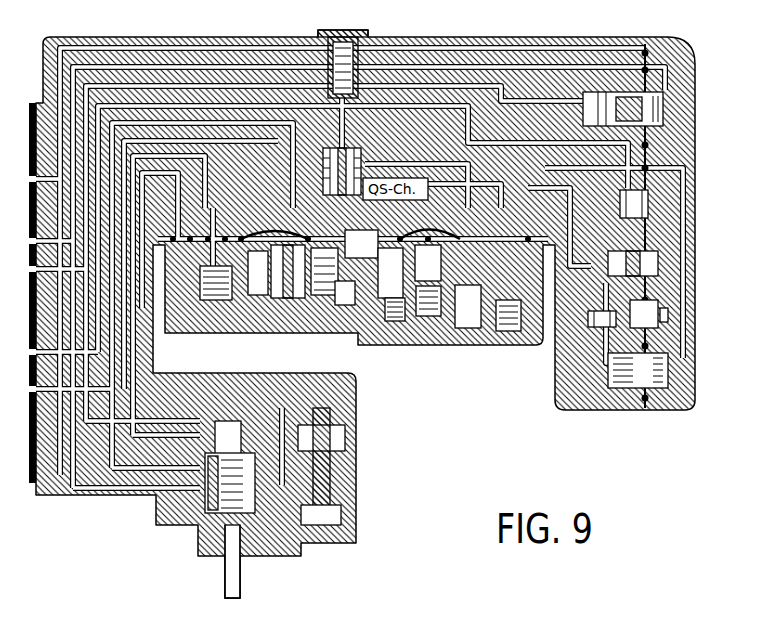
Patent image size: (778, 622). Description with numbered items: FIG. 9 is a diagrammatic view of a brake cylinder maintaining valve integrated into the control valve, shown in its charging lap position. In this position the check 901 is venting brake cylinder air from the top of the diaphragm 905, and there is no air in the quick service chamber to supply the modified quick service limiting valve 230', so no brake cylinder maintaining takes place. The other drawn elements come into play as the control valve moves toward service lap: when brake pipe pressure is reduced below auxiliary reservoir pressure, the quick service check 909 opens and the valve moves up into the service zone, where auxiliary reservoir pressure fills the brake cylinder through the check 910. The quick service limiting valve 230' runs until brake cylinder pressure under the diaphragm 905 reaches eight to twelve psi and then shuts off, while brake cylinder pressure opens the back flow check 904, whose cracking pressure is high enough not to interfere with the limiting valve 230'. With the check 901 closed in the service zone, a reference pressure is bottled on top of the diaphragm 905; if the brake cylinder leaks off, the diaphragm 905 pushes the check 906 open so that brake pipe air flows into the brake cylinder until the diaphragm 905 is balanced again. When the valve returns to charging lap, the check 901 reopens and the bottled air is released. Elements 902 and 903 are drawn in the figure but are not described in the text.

The check 910 is at (345, 85).
The quick service check 909 is at (345, 97).
The check 901 is at (408, 247).
The valve 902 is at (443, 328).
The valve 903 is at (680, 106).
The back flow check 904 is at (610, 207).
The diaphragm 905 is at (640, 258).
The check 906 is at (600, 305).
The modified quick service limiting valve 230' is at (707, 343).